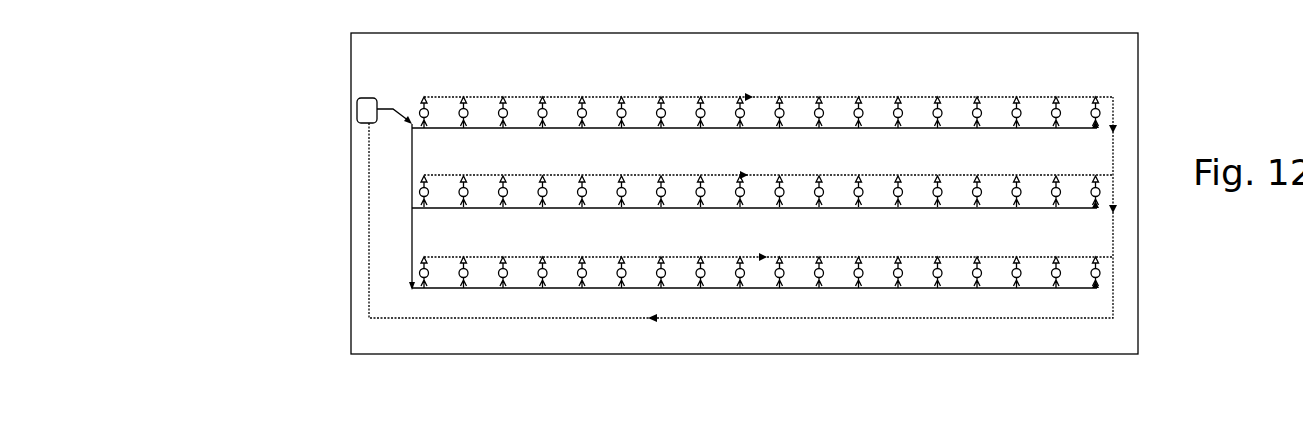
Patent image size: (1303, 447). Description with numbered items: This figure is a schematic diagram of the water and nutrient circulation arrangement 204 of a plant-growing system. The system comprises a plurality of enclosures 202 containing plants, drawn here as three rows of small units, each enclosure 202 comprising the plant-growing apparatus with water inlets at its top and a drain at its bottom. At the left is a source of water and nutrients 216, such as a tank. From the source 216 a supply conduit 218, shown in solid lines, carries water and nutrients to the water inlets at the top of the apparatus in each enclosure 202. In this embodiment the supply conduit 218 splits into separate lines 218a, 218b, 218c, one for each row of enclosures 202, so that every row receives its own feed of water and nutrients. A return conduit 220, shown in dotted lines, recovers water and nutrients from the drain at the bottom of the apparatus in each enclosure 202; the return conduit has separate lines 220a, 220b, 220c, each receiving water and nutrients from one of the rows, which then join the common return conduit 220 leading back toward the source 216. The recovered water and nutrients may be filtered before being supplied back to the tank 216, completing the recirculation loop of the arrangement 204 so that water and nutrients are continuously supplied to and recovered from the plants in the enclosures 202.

The enclosure 202 is at (428, 110).
The arrangement for circulating water and nutrients 204 is at (1172, 91).
The source of water and nutrients 216 is at (356, 106).
The supply conduit 218 is at (412, 168).
The supply line 218a is at (833, 130).
The supply line 218b is at (873, 209).
The supply line 218c is at (885, 289).
The return conduit 220 is at (753, 318).
The return line 220a is at (637, 96).
The return line 220b is at (640, 175).
The return line 220c is at (640, 257).